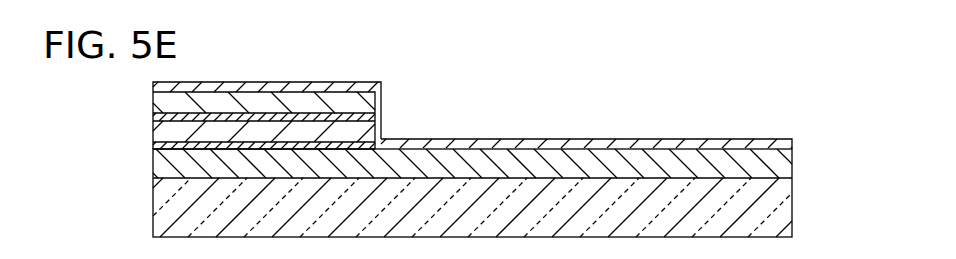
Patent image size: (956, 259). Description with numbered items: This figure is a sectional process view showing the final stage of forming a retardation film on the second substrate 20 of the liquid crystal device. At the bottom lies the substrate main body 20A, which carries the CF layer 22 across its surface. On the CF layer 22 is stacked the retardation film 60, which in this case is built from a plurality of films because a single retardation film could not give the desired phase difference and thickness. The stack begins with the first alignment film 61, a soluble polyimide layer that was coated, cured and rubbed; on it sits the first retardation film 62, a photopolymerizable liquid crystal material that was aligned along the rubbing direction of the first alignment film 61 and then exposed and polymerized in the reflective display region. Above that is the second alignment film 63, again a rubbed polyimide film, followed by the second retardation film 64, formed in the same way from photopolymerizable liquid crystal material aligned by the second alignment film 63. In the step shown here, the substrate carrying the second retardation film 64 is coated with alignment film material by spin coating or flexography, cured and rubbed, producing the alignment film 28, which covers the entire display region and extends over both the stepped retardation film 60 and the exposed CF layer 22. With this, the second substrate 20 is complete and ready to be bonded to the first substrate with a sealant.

The second substrate 20 is at (150, 92).
The substrate main body 20A is at (783, 215).
The CF layer 22 is at (783, 160).
The alignment film 28 is at (758, 139).
The retardation film 60 is at (477, 12).
The first alignment film 61 is at (360, 147).
The first retardation film 62 is at (362, 130).
The second alignment film 63 is at (368, 115).
The second retardation film 64 is at (357, 97).